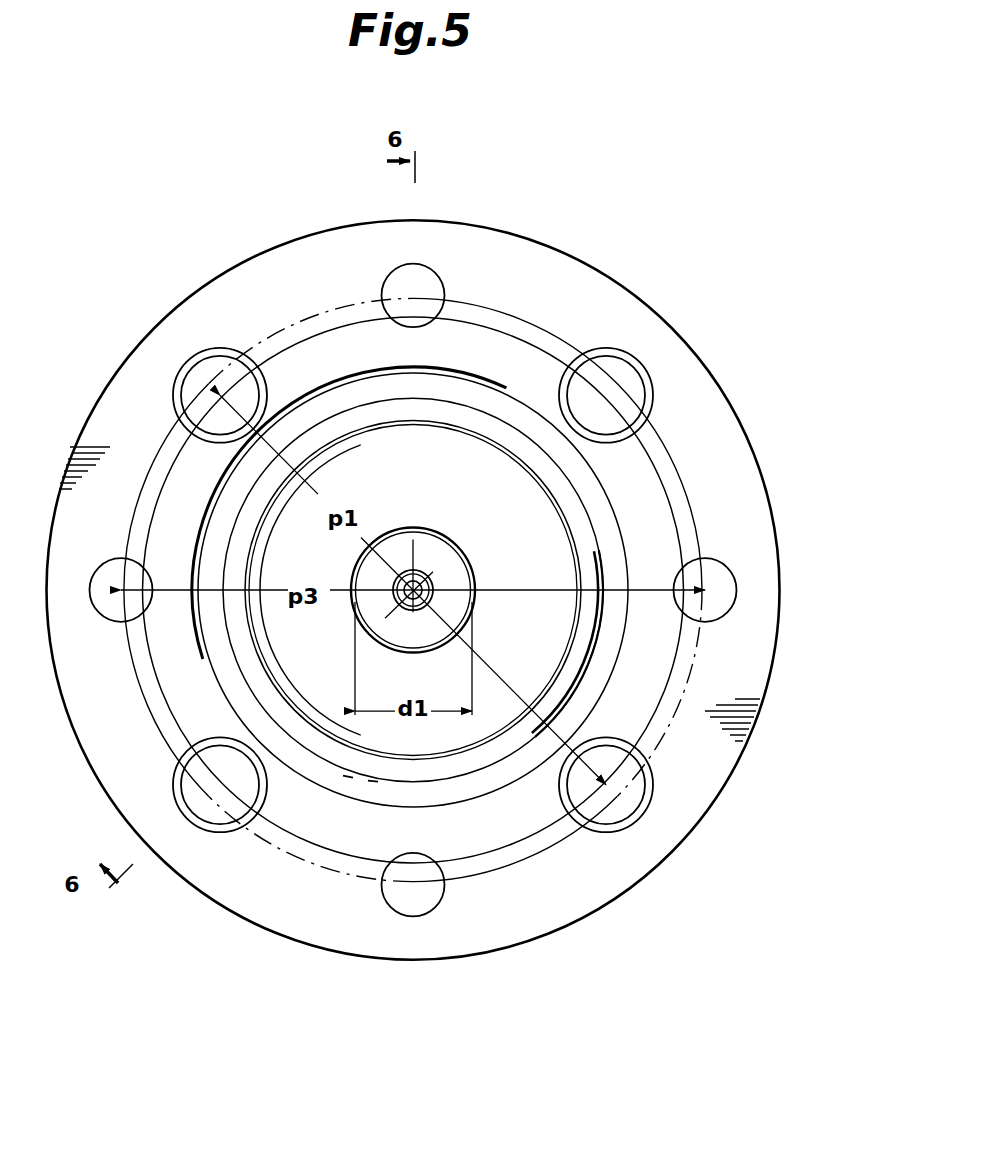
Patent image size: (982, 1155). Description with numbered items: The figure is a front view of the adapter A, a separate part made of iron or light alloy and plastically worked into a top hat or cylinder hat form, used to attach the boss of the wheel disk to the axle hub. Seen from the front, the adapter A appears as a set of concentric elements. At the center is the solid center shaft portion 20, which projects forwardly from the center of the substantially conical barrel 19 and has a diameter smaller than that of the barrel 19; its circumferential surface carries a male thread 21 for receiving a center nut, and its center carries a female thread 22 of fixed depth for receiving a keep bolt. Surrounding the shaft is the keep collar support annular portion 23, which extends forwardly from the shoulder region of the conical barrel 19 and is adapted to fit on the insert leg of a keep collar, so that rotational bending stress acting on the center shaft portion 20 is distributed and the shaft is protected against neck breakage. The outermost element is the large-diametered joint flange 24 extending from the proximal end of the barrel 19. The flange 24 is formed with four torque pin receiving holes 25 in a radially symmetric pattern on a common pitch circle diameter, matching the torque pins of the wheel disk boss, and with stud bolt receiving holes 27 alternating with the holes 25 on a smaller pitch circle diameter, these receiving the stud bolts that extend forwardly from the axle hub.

The conical barrel 19 is at (446, 447).
The center shaft portion 20 is at (406, 628).
The male thread 21 is at (402, 527).
The female thread 22 is at (433, 588).
The keep collar support annular portion 23 is at (583, 642).
The joint flange 24 is at (551, 907).
The torque pin receiving holes 25 is at (440, 280).
The stud bolt receiving holes 27 is at (193, 390).
The adapter A is at (607, 272).